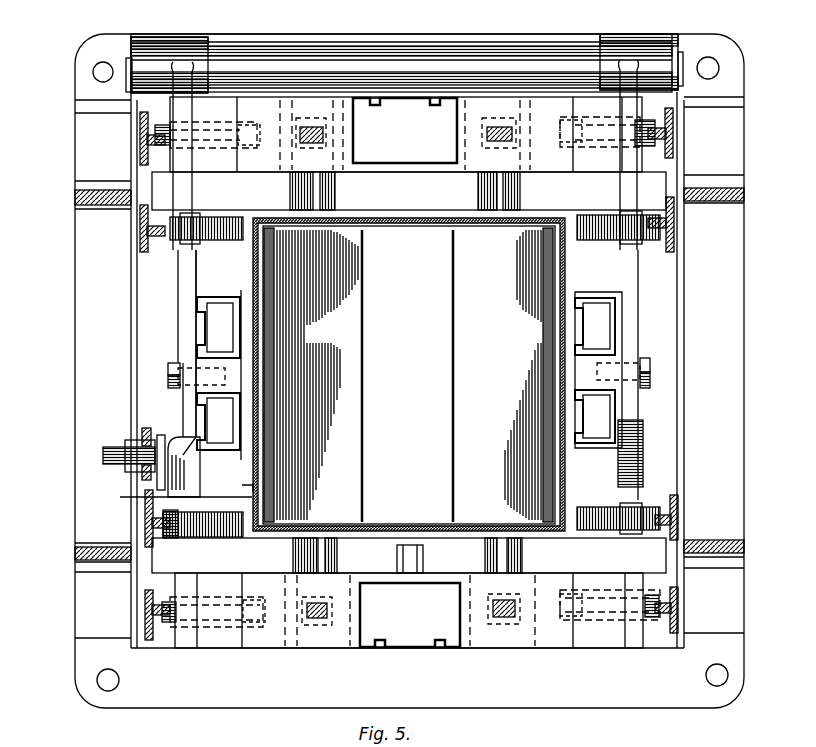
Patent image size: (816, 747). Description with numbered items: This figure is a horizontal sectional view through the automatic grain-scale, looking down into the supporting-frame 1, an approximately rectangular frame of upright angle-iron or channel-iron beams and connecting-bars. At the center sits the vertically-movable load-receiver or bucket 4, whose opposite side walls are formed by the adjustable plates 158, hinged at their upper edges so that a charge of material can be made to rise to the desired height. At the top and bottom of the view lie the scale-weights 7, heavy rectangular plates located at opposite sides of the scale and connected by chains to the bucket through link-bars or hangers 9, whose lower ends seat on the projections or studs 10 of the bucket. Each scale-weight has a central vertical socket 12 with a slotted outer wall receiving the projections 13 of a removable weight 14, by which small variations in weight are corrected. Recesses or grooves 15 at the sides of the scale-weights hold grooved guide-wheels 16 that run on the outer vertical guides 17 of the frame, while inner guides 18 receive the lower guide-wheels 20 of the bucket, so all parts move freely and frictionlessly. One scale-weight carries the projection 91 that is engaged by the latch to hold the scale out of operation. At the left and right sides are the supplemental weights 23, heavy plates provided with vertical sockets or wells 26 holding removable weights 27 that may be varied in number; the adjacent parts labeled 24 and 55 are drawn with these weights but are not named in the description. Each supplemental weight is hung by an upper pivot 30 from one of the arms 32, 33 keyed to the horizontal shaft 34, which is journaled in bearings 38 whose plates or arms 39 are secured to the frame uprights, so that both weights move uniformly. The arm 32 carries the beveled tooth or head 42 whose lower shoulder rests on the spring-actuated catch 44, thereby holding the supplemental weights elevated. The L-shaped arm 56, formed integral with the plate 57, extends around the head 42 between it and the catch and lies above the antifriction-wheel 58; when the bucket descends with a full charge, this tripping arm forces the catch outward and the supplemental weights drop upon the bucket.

The supporting-frame 1 is at (75, 203).
The load-receiver or bucket 4 is at (401, 226).
The scale-weights 7 is at (260, 172).
The link-bars or hangers 9 is at (308, 143).
The projections or studs 10 is at (335, 192).
The central vertical sockets 12 is at (348, 98).
The projections 13 is at (400, 100).
The removable weights 14 is at (406, 372).
The recesses or grooves 15 is at (245, 122).
The grooved guide-wheels 16 is at (152, 130).
The outer vertical guides 17 is at (140, 142).
The inner guides 18 is at (140, 233).
The lower guide-wheels 20 is at (166, 242).
The supplemental weights 23 is at (205, 362).
The arm 24 is at (240, 440).
The sockets or wells 26 is at (225, 303).
The removable weights 27 is at (210, 320).
The upper pivot 30 is at (167, 376).
The arm 32 is at (197, 204).
The arm 33 is at (622, 196).
The shaft 34 is at (330, 48).
The bearings 38 is at (143, 50).
The plates or arms 39 is at (135, 208).
The beveled tooth or head 42 is at (200, 472).
The spring-actuated catch 44 is at (142, 430).
The bracket 55 is at (212, 268).
The L-shaped arm 56 is at (140, 494).
The plate 57 is at (254, 488).
The antifriction-wheel 58 is at (108, 447).
The projection 91 is at (425, 560).
The adjustable plates 158 is at (462, 297).